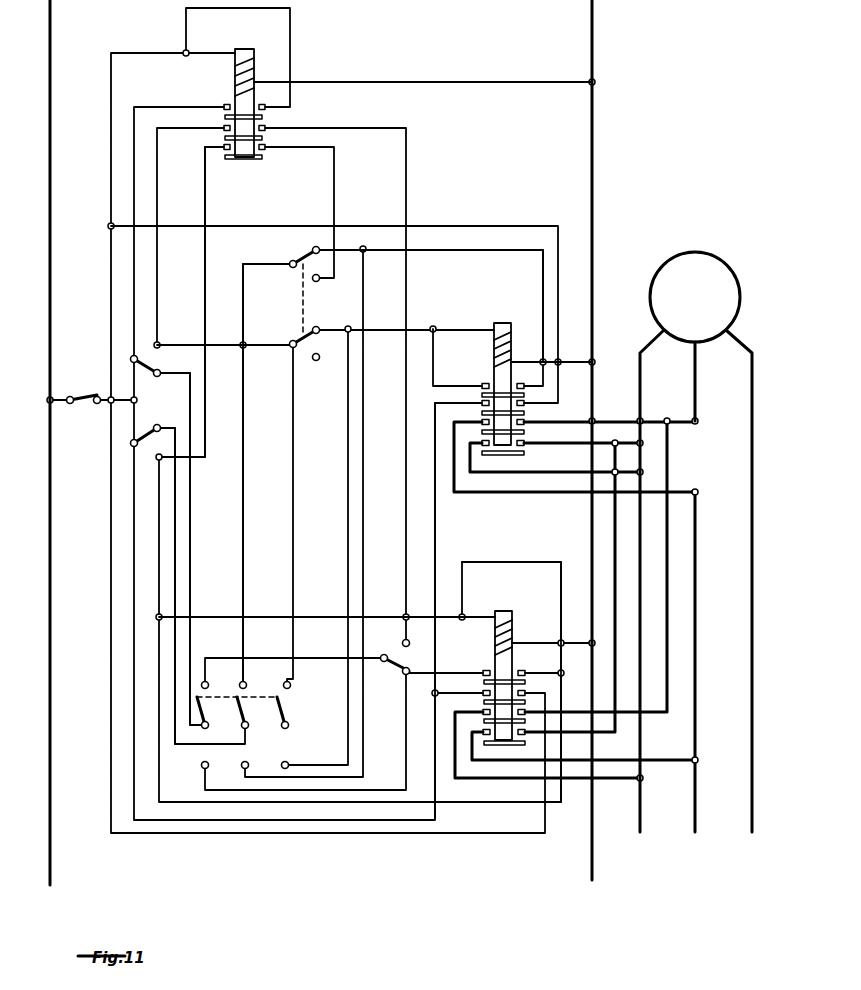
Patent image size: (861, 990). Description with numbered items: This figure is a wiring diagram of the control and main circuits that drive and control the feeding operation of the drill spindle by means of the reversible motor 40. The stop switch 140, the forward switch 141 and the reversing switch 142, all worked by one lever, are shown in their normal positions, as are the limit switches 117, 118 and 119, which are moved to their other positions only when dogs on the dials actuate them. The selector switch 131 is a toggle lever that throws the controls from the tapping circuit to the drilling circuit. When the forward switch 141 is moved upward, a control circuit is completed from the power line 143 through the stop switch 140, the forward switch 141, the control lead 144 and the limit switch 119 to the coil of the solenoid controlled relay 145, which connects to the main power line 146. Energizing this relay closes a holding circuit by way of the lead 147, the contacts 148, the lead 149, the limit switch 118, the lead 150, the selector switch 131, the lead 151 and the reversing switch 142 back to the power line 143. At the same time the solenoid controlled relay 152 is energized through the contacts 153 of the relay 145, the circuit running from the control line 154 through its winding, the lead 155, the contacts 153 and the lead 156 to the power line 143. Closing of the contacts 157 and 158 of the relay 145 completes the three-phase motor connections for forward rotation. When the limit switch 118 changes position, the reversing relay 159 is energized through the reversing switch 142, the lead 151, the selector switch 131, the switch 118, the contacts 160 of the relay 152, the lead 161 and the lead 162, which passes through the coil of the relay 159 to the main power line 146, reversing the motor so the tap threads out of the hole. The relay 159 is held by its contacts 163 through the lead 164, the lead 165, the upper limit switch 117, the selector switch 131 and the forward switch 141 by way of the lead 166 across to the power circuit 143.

The reversible motor 40 is at (688, 263).
The upper limit switch 117 is at (398, 663).
The limit switch 118 is at (306, 258).
The limit switch 119 is at (302, 337).
The selector switch 131 is at (283, 714).
The stop switch 140 is at (84, 402).
The forward switch 141 is at (152, 367).
The reversing switch 142 is at (144, 434).
The power line 143 is at (50, 372).
The control lead 144 is at (250, 345).
The solenoid controlled relay 145 is at (503, 323).
The main power line 146 is at (592, 231).
The lead 147 is at (435, 372).
The contacts 148 is at (486, 386).
The lead 149 is at (520, 249).
The lead 150 is at (243, 540).
The lead 151 is at (176, 560).
The solenoid controlled relay 152 is at (94, 370).
The contacts 153 is at (499, 400).
The control line 154 is at (530, 82).
The lead 155 is at (258, 226).
The lead 156 is at (436, 560).
The contacts 157 is at (482, 422).
The contacts 158 is at (244, 49).
The reversing relay 159 is at (503, 611).
The contacts 160 is at (227, 152).
The lead 161 is at (205, 275).
The lead 162 is at (320, 618).
The contacts 163 is at (484, 672).
The lead 164 is at (522, 562).
The lead 165 is at (483, 682).
The lead 166 is at (190, 598).